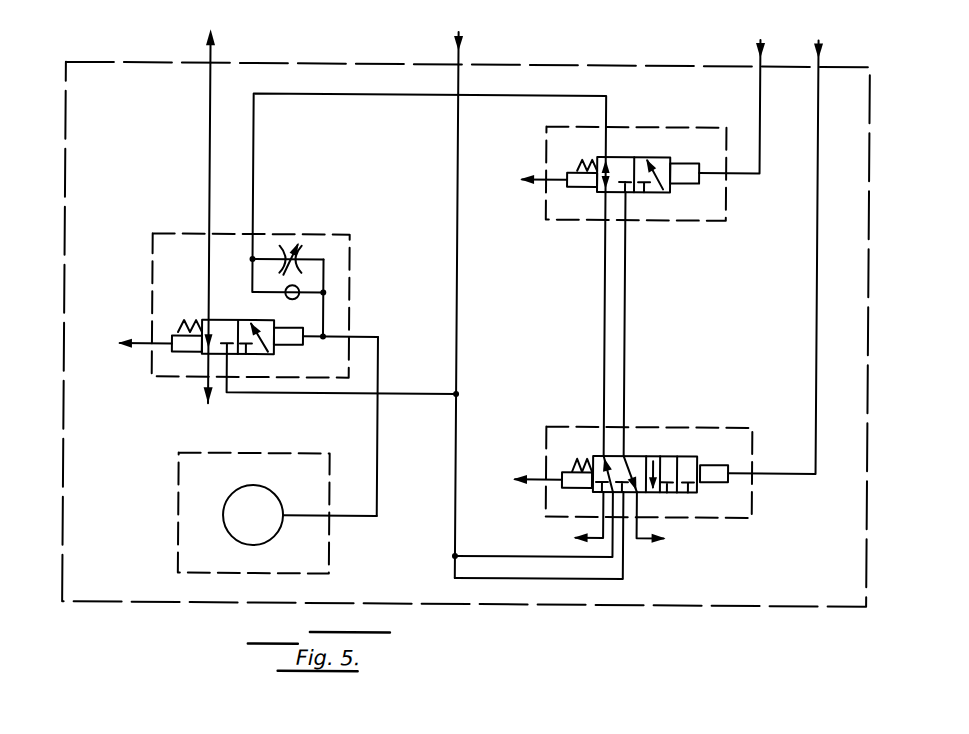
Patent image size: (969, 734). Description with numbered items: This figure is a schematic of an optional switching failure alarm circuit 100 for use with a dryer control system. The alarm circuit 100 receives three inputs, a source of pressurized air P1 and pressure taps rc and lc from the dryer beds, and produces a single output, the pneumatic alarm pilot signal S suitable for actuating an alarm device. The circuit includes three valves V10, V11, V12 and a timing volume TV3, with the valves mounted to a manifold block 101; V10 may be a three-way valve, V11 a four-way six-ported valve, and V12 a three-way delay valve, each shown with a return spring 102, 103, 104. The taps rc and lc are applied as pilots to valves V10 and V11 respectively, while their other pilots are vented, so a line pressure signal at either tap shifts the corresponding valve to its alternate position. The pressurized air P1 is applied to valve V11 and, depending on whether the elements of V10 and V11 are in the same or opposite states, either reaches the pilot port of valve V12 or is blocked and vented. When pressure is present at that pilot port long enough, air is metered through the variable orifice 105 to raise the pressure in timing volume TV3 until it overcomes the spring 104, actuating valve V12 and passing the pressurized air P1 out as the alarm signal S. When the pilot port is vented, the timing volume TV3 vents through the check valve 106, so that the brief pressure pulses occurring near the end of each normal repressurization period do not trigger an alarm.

The alarm circuit 100 is at (614, 34).
The manifold block 101 is at (751, 606).
The return spring of valve V10 102 is at (581, 153).
The return spring of valve V11 103 is at (576, 454).
The spring 104 is at (183, 313).
The variable orifice 105 is at (288, 246).
The check valve 106 is at (300, 289).
The three-way valve V10 is at (635, 185).
The four-way six-ported valve V11 is at (616, 495).
The three-way delay valve V12 is at (261, 303).
The timing volume TV3 is at (246, 513).
The alarm pilot signal S is at (208, 205).
The source of pressurized air P1 is at (456, 293).
The pressure tap rc is at (736, 95).
The pressure tap lc is at (778, 245).